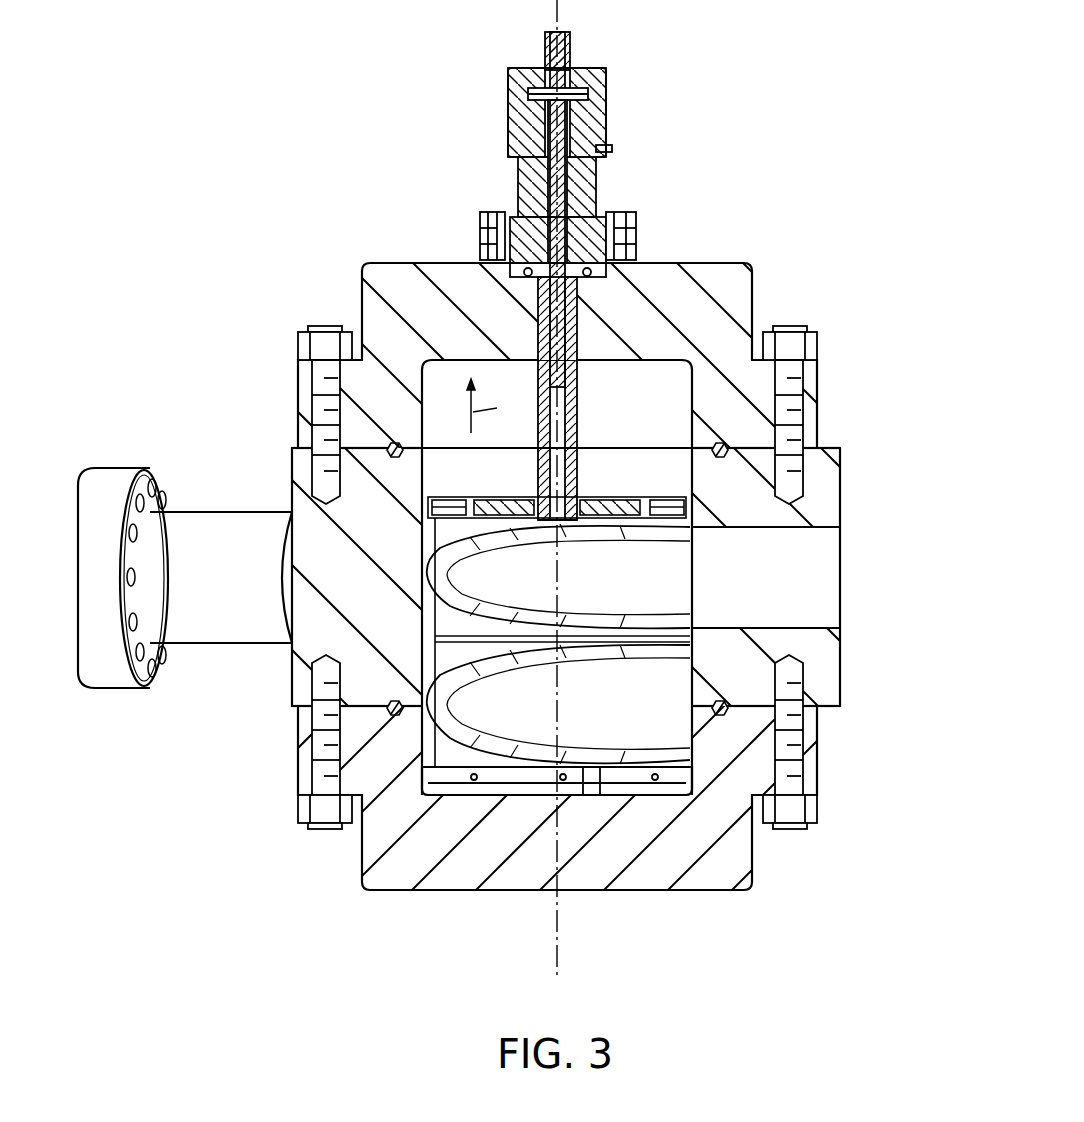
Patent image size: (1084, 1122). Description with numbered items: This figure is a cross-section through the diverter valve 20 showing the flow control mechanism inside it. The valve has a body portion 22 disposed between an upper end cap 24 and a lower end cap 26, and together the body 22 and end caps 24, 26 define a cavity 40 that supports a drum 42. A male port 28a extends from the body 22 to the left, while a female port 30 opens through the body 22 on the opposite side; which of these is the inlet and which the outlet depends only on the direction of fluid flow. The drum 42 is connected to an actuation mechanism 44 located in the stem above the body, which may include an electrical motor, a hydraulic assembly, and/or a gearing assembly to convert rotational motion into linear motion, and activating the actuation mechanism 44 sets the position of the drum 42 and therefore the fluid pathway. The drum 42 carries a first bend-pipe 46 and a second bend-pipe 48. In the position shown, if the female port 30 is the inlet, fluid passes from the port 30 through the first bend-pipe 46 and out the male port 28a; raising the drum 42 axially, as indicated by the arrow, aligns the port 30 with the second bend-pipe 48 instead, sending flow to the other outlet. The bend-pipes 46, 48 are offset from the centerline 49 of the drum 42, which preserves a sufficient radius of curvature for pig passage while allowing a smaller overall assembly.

The diverter valve 20 is at (542, 561).
The body portion 22 is at (820, 475).
The end cap 24 is at (745, 282).
The end cap 26 is at (742, 853).
The male port 28a is at (115, 473).
The female port 30 is at (820, 560).
The cavity 40 is at (652, 420).
The drum 42 is at (477, 622).
The actuation mechanism 44 is at (606, 141).
The first bend-pipe 46 is at (530, 530).
The second bend-pipe 48 is at (513, 660).
The centerline 49 is at (553, 933).